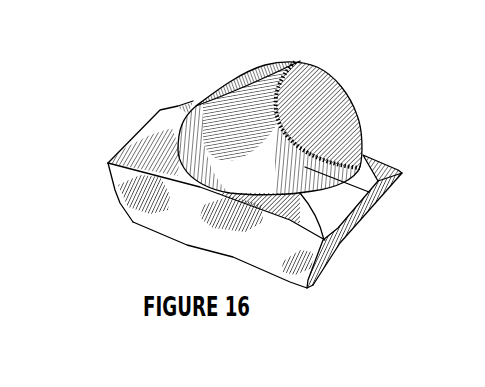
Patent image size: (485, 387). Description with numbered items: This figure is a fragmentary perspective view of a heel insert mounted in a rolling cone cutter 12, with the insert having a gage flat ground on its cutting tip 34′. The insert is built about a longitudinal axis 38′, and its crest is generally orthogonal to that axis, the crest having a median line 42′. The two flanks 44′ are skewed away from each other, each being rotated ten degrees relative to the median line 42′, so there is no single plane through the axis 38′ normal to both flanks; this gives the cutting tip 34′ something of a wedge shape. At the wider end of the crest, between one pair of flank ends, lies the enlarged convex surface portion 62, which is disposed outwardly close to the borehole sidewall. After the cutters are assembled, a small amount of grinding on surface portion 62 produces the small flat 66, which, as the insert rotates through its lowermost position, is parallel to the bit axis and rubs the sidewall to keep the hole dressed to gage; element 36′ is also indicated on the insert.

The rolling cone cutter 12 is at (133, 222).
The longitudinal axis 38′ is at (271, 80).
The median line 42′ is at (268, 85).
The flank 44′ is at (333, 102).
The surface portion 62 is at (202, 103).
The flat 66 is at (221, 128).
The cutting tip 34′ is at (369, 192).
The side rail strip 36′ is at (325, 240).